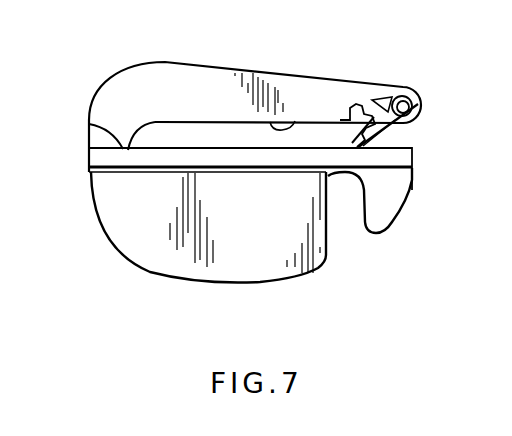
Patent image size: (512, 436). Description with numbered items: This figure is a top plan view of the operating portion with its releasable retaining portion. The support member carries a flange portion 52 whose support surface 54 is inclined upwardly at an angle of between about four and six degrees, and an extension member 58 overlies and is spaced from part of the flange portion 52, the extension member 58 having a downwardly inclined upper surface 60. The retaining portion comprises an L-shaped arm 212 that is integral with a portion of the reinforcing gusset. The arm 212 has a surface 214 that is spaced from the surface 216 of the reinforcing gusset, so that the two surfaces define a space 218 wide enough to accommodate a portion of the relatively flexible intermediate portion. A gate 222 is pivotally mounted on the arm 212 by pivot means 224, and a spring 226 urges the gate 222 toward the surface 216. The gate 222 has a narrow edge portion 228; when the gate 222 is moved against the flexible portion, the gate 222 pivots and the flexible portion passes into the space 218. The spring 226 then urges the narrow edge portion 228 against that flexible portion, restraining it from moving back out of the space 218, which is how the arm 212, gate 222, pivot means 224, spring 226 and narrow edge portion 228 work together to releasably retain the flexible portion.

The L-shaped arm 212 is at (130, 83).
The extension member 58 is at (89, 127).
The space 218 is at (180, 136).
The surface 214 is at (293, 122).
The upper surface 60 is at (389, 163).
The flange portion 52 is at (305, 278).
The support surface 54 is at (270, 247).
The surface 216 is at (255, 142).
The pivot means 224 is at (423, 101).
The spring 226 is at (378, 100).
The gate 222 is at (388, 122).
The narrow edge portion 228 is at (350, 130).